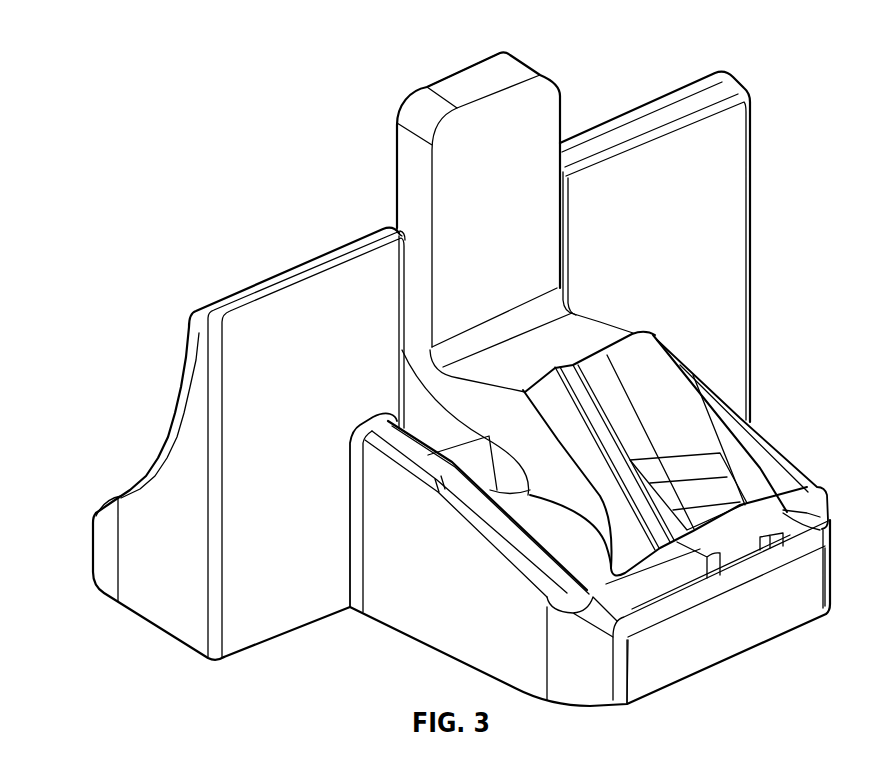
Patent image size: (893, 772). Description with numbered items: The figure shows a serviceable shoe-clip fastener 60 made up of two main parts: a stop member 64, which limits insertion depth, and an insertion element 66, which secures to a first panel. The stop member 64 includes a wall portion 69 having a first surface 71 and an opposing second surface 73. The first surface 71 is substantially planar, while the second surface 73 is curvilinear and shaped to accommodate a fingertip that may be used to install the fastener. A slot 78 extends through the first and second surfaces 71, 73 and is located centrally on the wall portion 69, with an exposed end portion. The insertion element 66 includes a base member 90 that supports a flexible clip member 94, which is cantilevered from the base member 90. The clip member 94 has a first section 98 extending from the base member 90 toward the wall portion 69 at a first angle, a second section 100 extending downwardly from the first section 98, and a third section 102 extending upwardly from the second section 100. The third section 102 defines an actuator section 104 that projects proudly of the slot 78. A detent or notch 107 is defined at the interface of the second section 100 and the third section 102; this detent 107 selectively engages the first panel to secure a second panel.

The serviceable shoe-clip fastener 60 is at (152, 187).
The stop member 64 is at (136, 590).
The insertion element 66 is at (428, 633).
The wall portion 69 is at (667, 105).
The first surface 71 is at (267, 343).
The second surface 73 is at (178, 401).
The slot 78 is at (396, 230).
The base member 90 is at (743, 637).
The flexible clip member 94 is at (366, 141).
The first section 98 is at (643, 432).
The second section 100 is at (590, 338).
The third section 102 is at (543, 222).
The actuator section 104 is at (467, 80).
The detent 107 is at (458, 348).